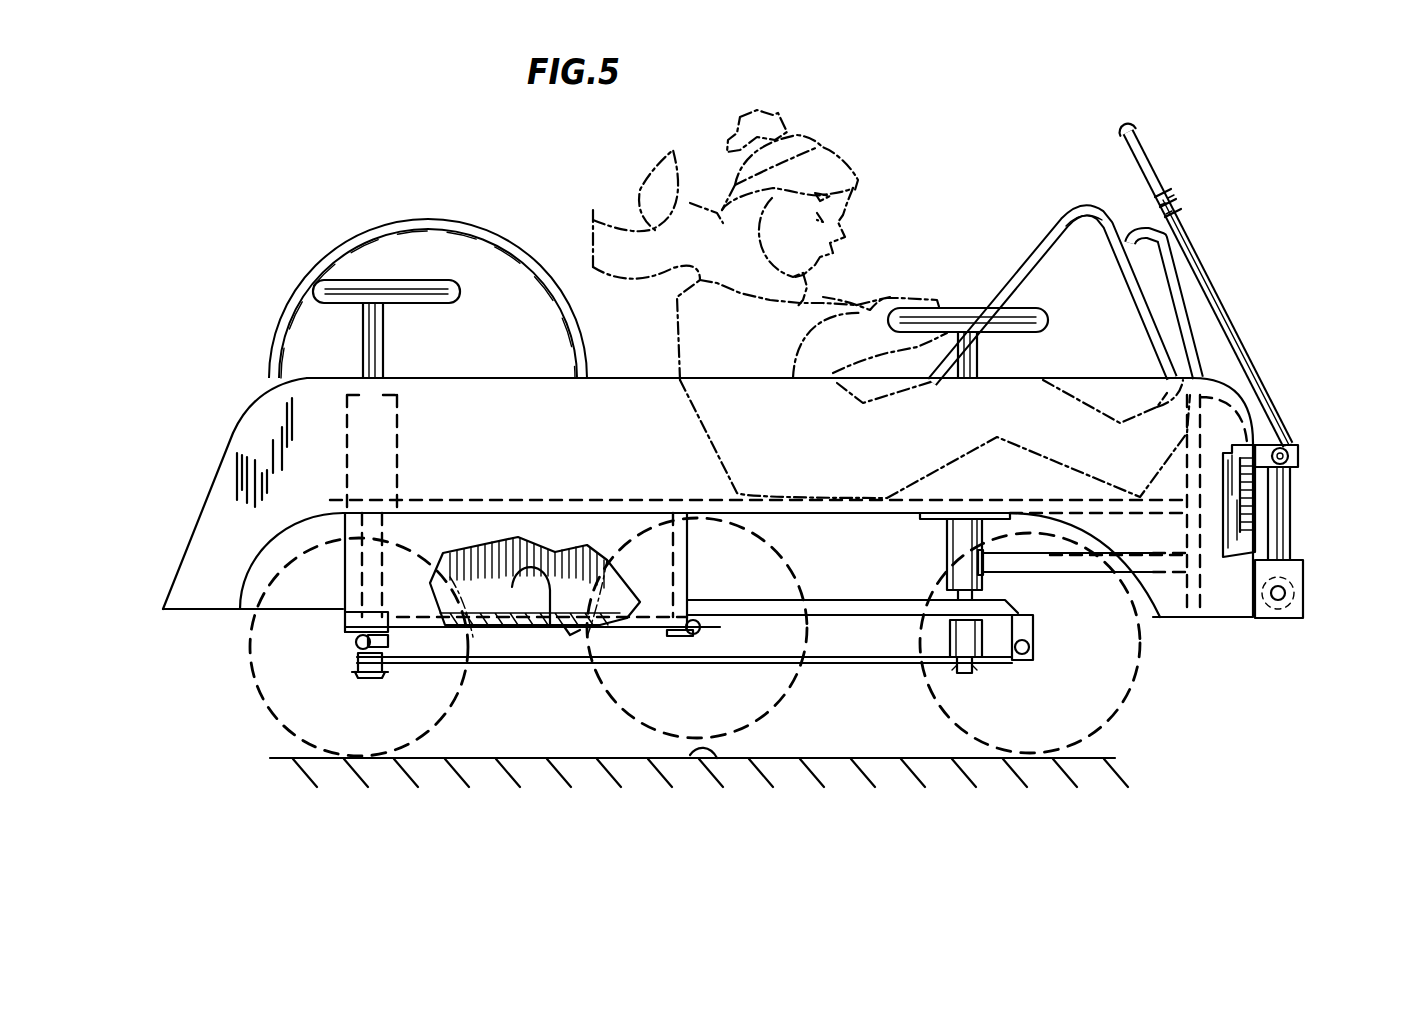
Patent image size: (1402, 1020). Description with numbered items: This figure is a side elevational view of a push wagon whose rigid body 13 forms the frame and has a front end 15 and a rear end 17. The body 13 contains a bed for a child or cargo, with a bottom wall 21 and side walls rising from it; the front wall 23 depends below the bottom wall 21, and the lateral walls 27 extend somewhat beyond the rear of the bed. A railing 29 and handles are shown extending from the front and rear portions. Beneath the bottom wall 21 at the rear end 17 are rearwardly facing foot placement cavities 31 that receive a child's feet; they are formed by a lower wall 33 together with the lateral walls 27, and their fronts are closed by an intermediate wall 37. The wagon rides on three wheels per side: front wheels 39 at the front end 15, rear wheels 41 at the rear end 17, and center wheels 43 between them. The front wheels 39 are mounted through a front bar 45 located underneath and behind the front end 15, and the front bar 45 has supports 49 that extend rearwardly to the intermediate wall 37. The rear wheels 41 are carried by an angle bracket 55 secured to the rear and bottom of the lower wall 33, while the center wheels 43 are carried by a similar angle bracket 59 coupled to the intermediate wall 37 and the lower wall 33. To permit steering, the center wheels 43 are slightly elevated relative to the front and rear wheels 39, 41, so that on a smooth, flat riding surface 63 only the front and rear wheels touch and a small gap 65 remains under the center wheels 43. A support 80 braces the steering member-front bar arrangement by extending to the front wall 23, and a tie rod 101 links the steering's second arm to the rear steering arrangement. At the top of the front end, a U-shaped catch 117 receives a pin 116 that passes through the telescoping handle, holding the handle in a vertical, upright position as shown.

The body 13 is at (643, 400).
The front end 15 is at (1280, 447).
The rear end 17 is at (200, 510).
The bottom wall 21 is at (860, 515).
The front wall 23 is at (1263, 512).
The lateral walls 27 is at (795, 400).
The railing 29 is at (403, 224).
The foot placement cavities 31 is at (550, 590).
The lower wall 33 is at (518, 613).
The intermediate wall 37 is at (693, 517).
The front wheels 39 is at (1130, 683).
The rear wheels 41 is at (427, 740).
The center wheels 43 is at (773, 713).
The front bar 45 is at (1035, 627).
The supports 49 is at (900, 613).
The angle bracket 55 is at (345, 637).
The angle bracket 59 is at (677, 637).
The riding surface 63 is at (917, 757).
The gap 65 is at (717, 760).
The support 80 is at (1160, 617).
The tie rod 101 is at (827, 665).
The pin 116 is at (1290, 467).
The catch 117 is at (1298, 448).